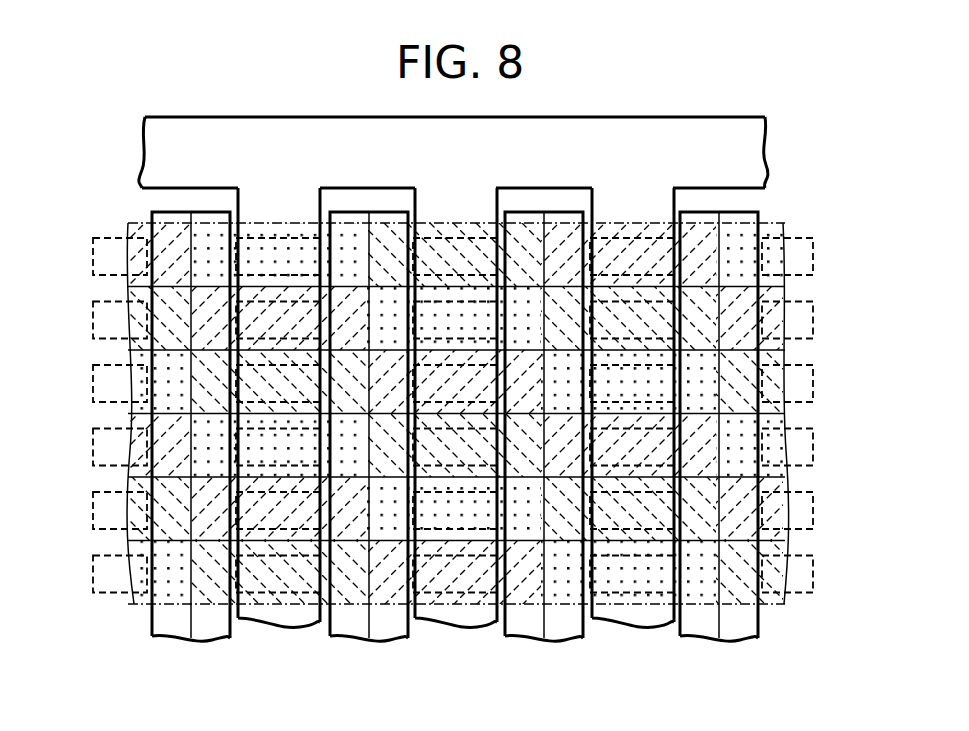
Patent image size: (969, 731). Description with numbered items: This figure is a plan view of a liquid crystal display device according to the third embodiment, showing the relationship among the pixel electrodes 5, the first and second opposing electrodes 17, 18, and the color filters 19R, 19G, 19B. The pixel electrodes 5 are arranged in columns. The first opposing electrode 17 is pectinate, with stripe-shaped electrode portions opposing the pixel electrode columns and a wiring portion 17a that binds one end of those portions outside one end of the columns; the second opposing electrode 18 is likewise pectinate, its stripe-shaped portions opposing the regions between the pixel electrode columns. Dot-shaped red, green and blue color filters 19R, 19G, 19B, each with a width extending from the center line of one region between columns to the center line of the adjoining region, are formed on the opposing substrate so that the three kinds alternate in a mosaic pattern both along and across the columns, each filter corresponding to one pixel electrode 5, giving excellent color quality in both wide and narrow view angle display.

The wiring portion 17a is at (753, 143).
The first opposing electrode 17 is at (263, 613).
The second opposing electrode 18 is at (167, 620).
The pixel electrode 5 is at (262, 233).
The red color filter 19R is at (649, 222).
The green color filter 19G is at (479, 222).
The blue color filter 19B is at (298, 222).